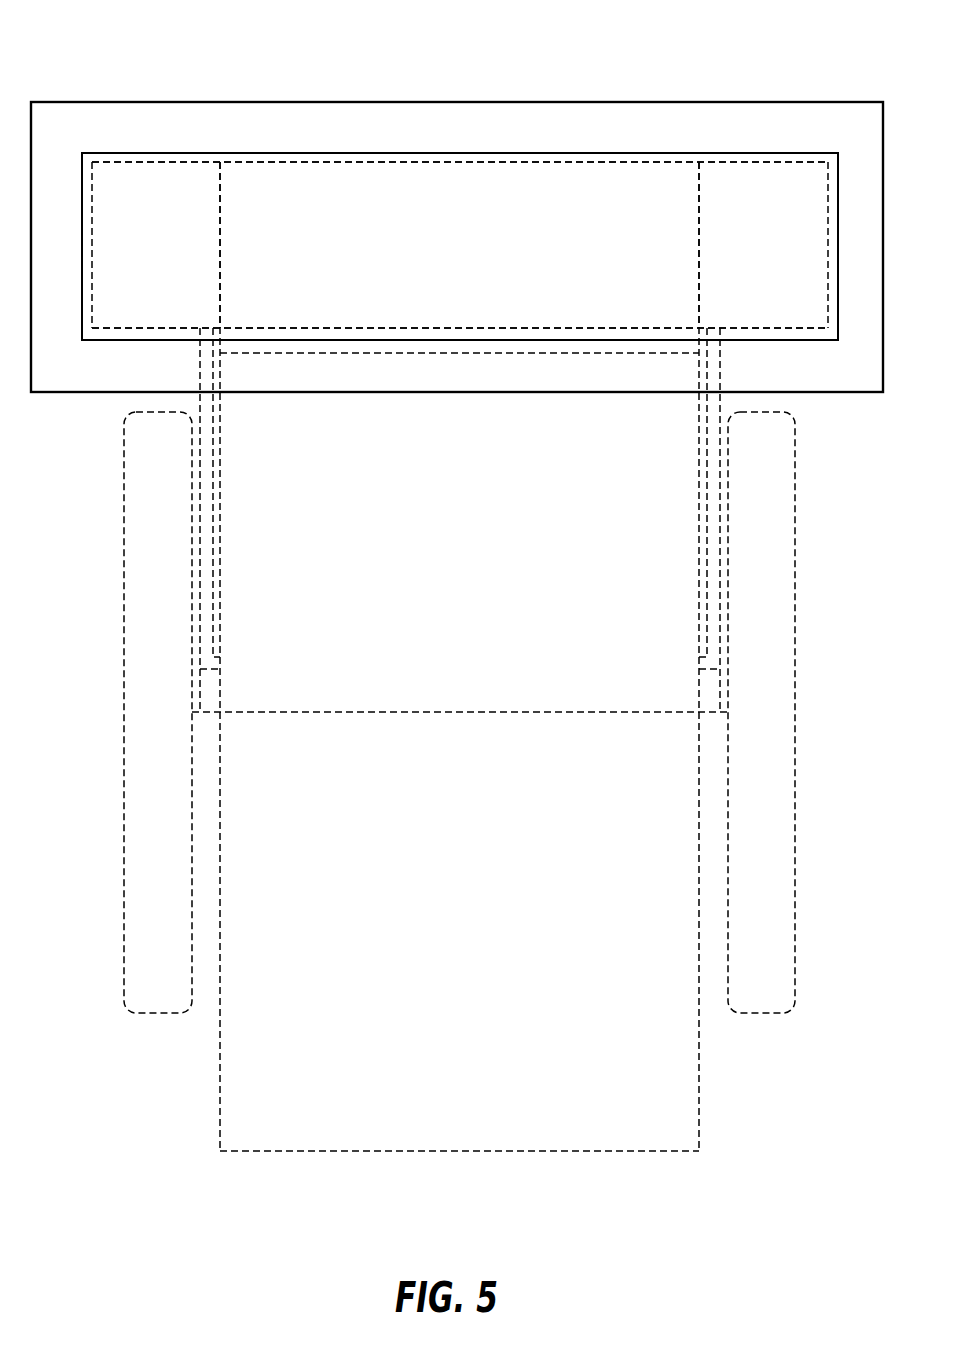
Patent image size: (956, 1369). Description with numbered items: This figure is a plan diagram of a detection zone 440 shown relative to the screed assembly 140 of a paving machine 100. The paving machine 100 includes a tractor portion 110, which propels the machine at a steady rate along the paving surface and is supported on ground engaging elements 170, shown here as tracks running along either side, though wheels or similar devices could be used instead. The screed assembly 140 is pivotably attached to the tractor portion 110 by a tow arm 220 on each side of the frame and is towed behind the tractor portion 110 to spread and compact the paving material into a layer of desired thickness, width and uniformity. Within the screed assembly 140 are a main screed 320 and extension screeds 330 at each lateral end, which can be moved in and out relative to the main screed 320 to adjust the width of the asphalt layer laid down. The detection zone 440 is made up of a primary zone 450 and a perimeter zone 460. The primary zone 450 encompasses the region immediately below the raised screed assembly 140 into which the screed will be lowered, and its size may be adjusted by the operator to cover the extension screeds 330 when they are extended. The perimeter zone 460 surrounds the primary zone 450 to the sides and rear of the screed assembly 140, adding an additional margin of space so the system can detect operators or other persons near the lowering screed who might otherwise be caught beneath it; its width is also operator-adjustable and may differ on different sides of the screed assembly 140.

The paving machine 100 is at (779, 1113).
The tractor portion 110 is at (460, 1151).
The screed assembly 140 is at (533, 163).
The ground engaging elements 170 is at (795, 712).
The tow arm 220 is at (712, 530).
The main screed 320 is at (330, 328).
The extension screeds 330 is at (174, 256).
The detection zone 440 is at (840, 47).
The primary zone 450 is at (610, 173).
The perimeter zone 460 is at (727, 128).